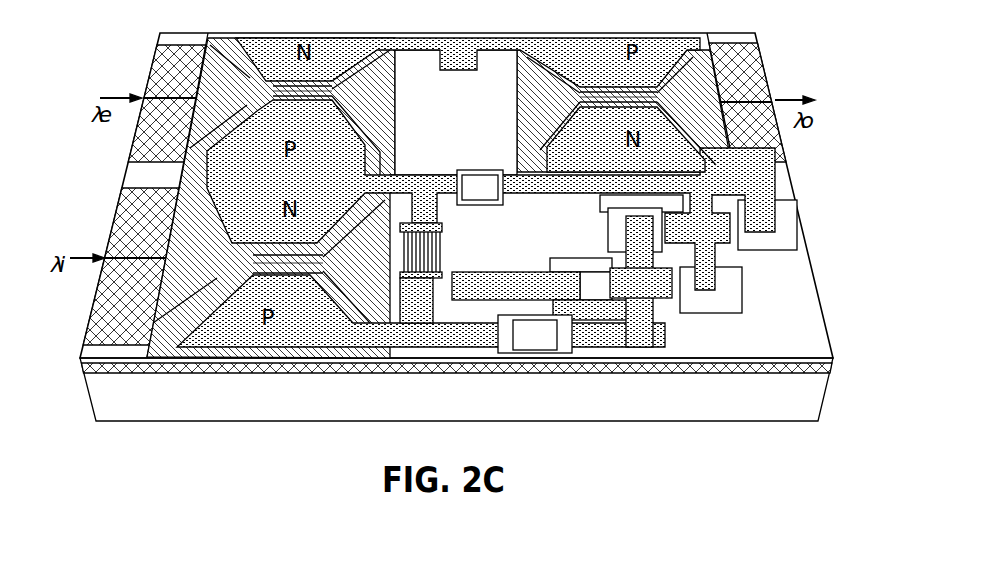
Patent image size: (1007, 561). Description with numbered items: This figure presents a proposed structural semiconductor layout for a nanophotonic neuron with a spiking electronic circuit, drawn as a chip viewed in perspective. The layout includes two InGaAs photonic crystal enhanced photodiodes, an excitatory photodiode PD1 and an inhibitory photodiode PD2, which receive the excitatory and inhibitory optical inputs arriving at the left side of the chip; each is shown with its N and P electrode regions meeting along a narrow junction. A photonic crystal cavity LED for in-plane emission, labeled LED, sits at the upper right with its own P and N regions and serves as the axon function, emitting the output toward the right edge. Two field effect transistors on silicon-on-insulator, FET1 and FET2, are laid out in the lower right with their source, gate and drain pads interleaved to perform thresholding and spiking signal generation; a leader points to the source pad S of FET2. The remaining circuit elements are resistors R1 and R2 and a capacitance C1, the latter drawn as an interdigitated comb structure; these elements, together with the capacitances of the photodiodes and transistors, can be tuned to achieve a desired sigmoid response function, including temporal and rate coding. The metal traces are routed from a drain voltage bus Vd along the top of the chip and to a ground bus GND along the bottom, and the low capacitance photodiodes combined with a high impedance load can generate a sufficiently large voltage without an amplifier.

The first photodiode PD1 is at (290, 110).
The second photodiode PD2 is at (269, 261).
The photonic crystal cavity LED is at (621, 111).
The first resistor R1 is at (480, 187).
The second resistor R2 is at (535, 334).
The capacitor C1 is at (434, 273).
The first field effect transistor FET1 is at (711, 273).
The second field effect transistor FET2 is at (675, 303).
The ground electrode GND is at (421, 313).
The drain voltage electrode Vd is at (468, 62).
The source electrode S is at (568, 287).